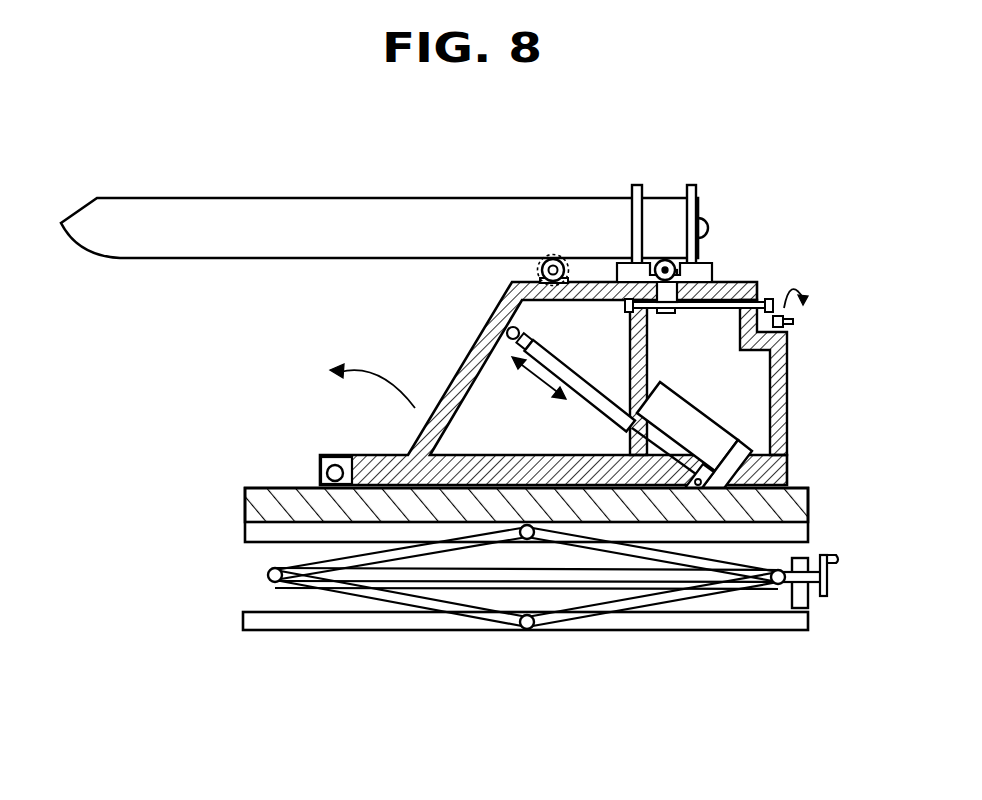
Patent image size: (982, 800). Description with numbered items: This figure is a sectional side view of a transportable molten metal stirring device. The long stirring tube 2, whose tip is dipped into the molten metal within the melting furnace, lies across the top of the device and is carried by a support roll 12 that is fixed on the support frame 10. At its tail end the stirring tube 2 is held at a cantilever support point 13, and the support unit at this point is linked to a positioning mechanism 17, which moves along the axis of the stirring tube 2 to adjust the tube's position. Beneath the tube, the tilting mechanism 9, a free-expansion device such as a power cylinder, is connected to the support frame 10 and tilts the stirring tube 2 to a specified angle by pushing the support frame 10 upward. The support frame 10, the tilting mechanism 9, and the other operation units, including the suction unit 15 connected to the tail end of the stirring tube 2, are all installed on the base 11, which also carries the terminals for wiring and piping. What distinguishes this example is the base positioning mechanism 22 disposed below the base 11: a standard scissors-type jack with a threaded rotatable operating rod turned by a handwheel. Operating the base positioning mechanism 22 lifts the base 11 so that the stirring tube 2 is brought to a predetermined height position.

The stirring tube 2 is at (242, 198).
The tilting mechanism 9 is at (582, 373).
The support frame 10 is at (745, 283).
The base 11 is at (810, 492).
The support roll 12 is at (557, 258).
The support point 13 is at (673, 264).
The suction unit 15 is at (328, 465).
The positioning mechanism 17 is at (689, 310).
The base positioning mechanism 22 is at (846, 520).